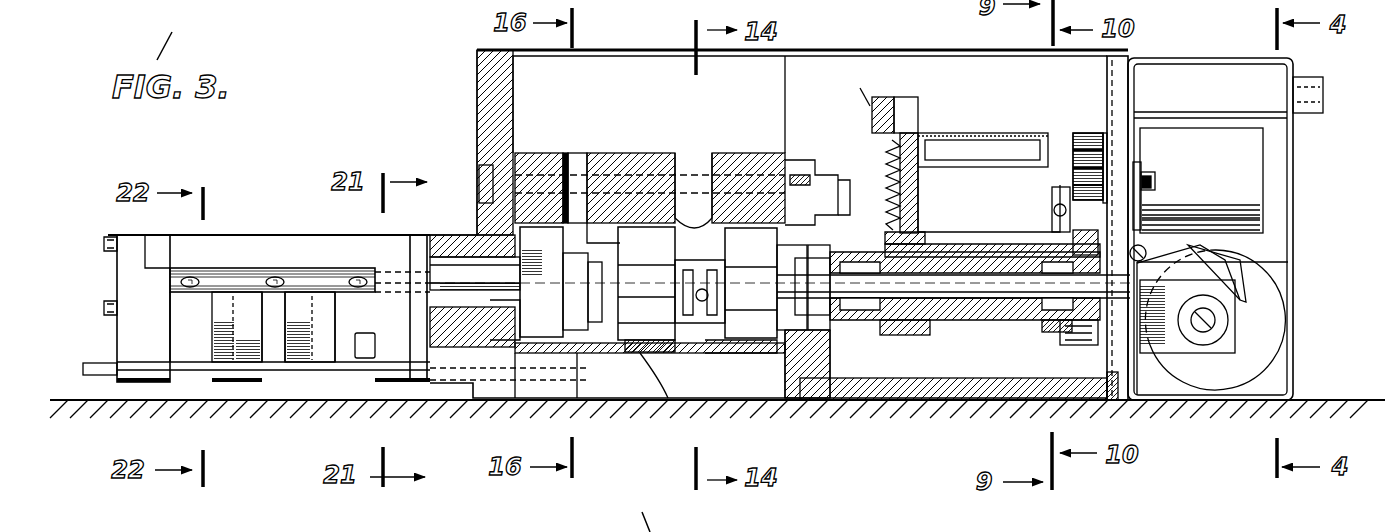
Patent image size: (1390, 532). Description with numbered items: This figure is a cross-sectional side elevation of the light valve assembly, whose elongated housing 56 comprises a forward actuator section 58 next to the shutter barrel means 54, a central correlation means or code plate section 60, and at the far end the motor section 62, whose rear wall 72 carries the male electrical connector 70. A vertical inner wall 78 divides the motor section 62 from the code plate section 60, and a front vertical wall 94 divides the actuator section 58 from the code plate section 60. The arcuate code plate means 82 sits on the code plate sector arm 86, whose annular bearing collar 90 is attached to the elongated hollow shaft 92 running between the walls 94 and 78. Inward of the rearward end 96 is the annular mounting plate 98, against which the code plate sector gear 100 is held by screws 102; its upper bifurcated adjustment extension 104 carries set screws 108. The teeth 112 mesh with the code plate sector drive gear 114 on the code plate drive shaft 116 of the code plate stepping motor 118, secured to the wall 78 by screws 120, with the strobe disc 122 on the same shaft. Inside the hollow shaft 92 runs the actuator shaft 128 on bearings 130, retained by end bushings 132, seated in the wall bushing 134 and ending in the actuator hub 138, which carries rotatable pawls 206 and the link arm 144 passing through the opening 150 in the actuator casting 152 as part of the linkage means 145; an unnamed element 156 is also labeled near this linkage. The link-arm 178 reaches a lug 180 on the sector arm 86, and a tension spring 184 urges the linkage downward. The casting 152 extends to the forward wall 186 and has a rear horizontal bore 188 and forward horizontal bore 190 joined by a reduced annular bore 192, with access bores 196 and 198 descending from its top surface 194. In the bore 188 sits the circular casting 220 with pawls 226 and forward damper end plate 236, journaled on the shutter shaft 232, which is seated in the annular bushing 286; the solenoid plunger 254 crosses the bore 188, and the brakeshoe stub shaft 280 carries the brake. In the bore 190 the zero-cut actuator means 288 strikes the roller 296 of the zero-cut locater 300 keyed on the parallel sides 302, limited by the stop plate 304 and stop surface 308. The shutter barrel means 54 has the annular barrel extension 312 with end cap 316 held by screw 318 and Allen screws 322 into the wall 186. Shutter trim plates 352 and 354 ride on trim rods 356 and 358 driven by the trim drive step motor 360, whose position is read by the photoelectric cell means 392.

The shutter barrel means 54 is at (255, 233).
The elongated housing 56 is at (474, 74).
The actuator section 58 is at (635, 372).
The correlation means or central code plate section 60 is at (926, 392).
The motor section 62 is at (1300, 246).
The male electrical connector 70 is at (1323, 105).
The rear wall 72 is at (1296, 308).
The vertical inner wall 78 is at (1118, 80).
The code plate means 82 is at (972, 133).
The code plate sector arm 86 is at (922, 179).
The annular bearing collar 90 is at (933, 243).
The elongated hollow shaft 92 is at (966, 315).
The front vertical wall 94 is at (792, 375).
The rearward end 96 is at (1100, 340).
The annular mounting plate 98 is at (1060, 243).
The code plate sector gear 100 is at (1160, 218).
The screws 102 is at (1058, 335).
The upper bifurcated adjustment extension 104 is at (1053, 211).
The set screws 108 is at (1053, 193).
The teeth 112 is at (1098, 140).
The code plate sector drive gear 114 is at (1138, 180).
The code plate drive shaft 116 is at (1153, 182).
The code plate stepping motor 118 is at (1250, 173).
The screws 120 is at (1158, 178).
The strobe disc 122 is at (1076, 130).
The actuator shaft 128 is at (780, 284).
The bearings 130 is at (1050, 311).
The end bushings 132 is at (1130, 290).
The wall bushing 134 is at (820, 375).
The actuator hub 138 is at (751, 317).
The link arm 144 is at (790, 247).
The linkage means 145 is at (868, 102).
The opening 150 is at (786, 182).
The actuator casting 152 is at (648, 152).
The stop 156 is at (843, 170).
The link-arm 178 is at (882, 96).
The lug 180 is at (906, 97).
The tension spring 184 is at (905, 200).
The forward wall 186 is at (497, 86).
The rear horizontal bore 188 is at (714, 346).
The forward horizontal bore 190 is at (542, 340).
The reduced annular bore 192 is at (598, 235).
The top surface 194 is at (524, 152).
The annular bore 196 is at (708, 160).
The annular bore 198 is at (578, 160).
The rotatable pawls 206 is at (751, 283).
The circular casting 220 is at (646, 325).
The pawls 226 is at (646, 283).
The shutter shaft 232 is at (646, 283).
The forward damper end plate 236 is at (688, 175).
The solenoid plunger 254 is at (703, 289).
The brakeshoe stub shaft 280 is at (668, 400).
The annular bushing 286 is at (603, 375).
The zero-cut actuator means 288 is at (518, 222).
The roller 296 is at (577, 262).
The zero-cut locater 300 is at (555, 242).
The parallel sides 302 is at (442, 312).
The stop plate 304 is at (500, 347).
The stop surface 308 is at (819, 287).
The annular barrel extension 312 is at (298, 262).
The end cap 316 is at (135, 335).
The screw 318 is at (104, 308).
The Allen screws 322 is at (367, 372).
The shutter trim plate 352 is at (230, 375).
The shutter trim plate 354 is at (327, 372).
The trim rod 356 is at (195, 378).
The trim rod 358 is at (92, 375).
The trim drive step motor 360 is at (1265, 354).
The photoelectric cell means 392 is at (1240, 296).